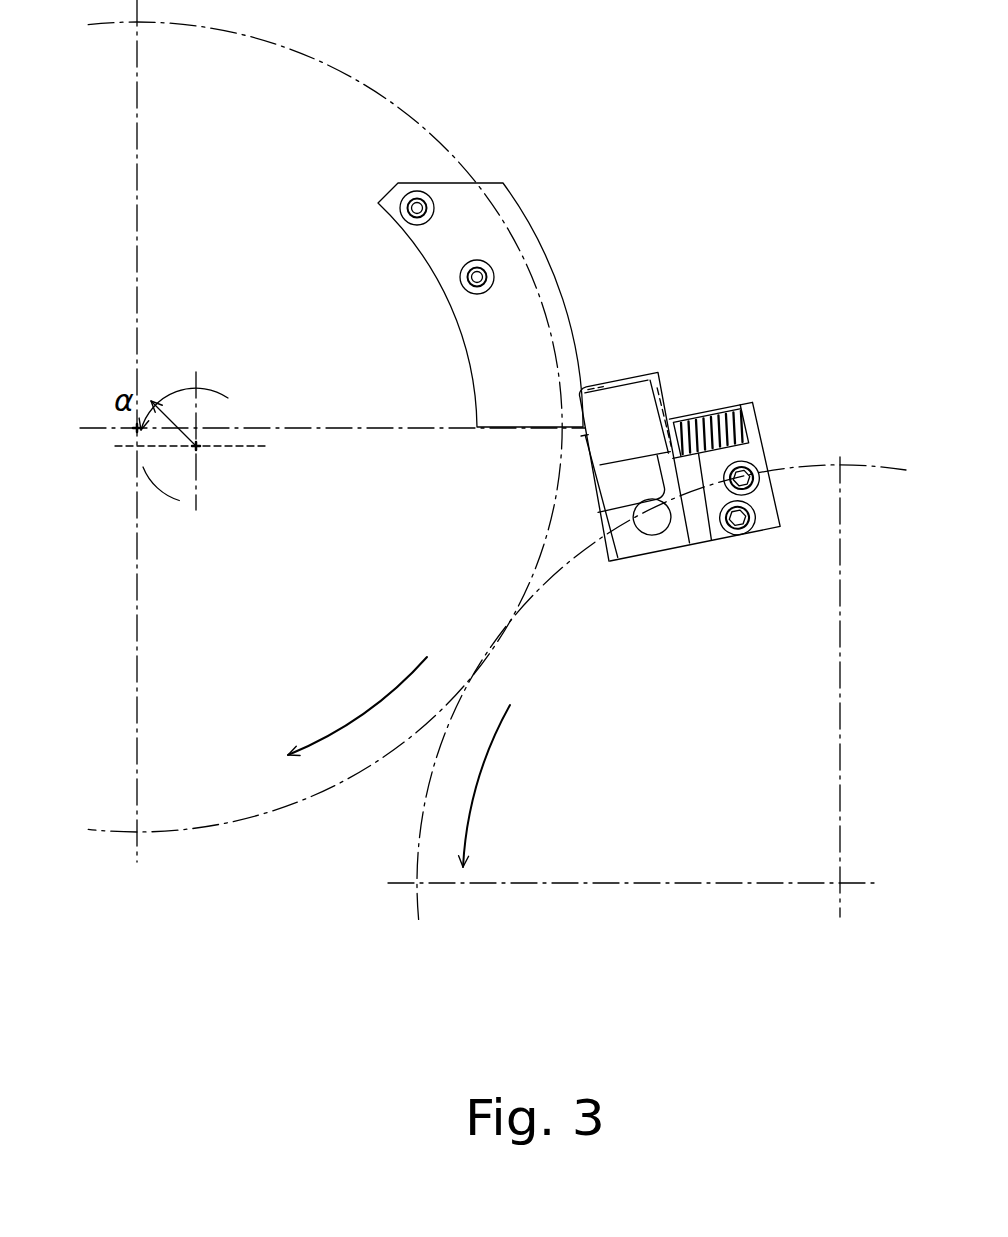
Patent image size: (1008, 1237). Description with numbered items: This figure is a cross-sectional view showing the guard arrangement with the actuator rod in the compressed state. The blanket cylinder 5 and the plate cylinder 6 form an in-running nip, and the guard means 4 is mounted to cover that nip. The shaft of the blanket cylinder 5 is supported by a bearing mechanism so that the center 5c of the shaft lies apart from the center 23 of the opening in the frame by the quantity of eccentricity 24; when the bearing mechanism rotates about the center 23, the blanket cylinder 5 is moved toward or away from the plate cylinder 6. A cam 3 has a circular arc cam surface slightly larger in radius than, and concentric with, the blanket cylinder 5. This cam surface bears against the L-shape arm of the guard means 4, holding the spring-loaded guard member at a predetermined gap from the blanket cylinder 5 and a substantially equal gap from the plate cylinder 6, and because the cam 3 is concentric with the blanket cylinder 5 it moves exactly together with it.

The cam 3 is at (483, 217).
The guard means 4 is at (727, 260).
The blanket cylinder 5 is at (347, 72).
The center of the shaft of the blanket cylinder 5c is at (137, 429).
The plate cylinder 6 is at (812, 463).
The center of the opening 23 is at (197, 447).
The quantity of eccentricity 24 is at (140, 468).